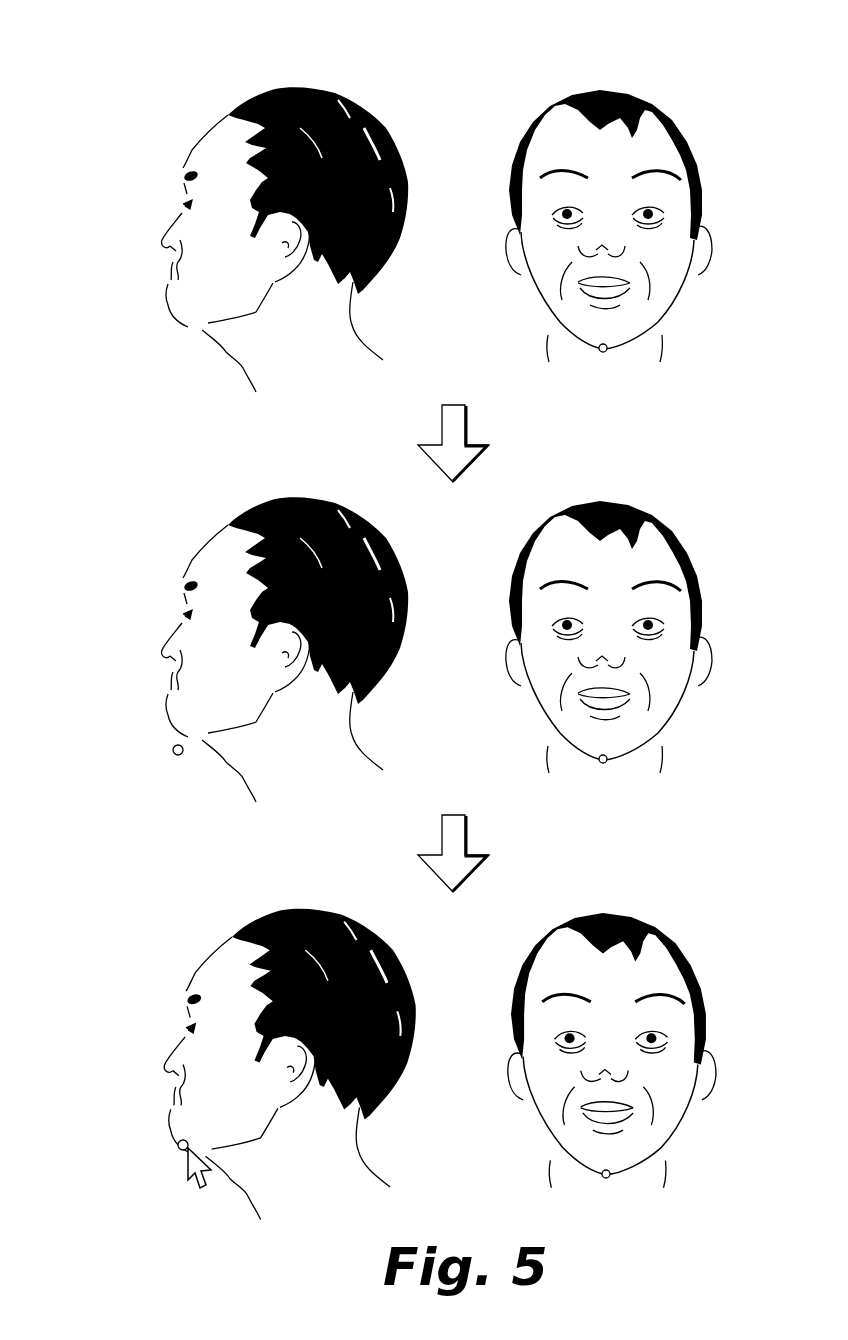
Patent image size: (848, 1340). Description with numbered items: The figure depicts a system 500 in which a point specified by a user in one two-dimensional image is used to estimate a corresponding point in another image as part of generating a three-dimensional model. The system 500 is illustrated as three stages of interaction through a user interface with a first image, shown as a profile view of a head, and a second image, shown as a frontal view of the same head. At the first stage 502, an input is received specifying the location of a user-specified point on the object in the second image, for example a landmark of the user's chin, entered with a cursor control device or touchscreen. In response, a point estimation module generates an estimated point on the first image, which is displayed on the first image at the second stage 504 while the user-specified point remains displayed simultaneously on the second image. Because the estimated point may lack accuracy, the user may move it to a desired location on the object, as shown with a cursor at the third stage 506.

The system 500 is at (396, 613).
The first stage 502 is at (241, 225).
The second stage 504 is at (250, 632).
The third stage 506 is at (262, 1049).